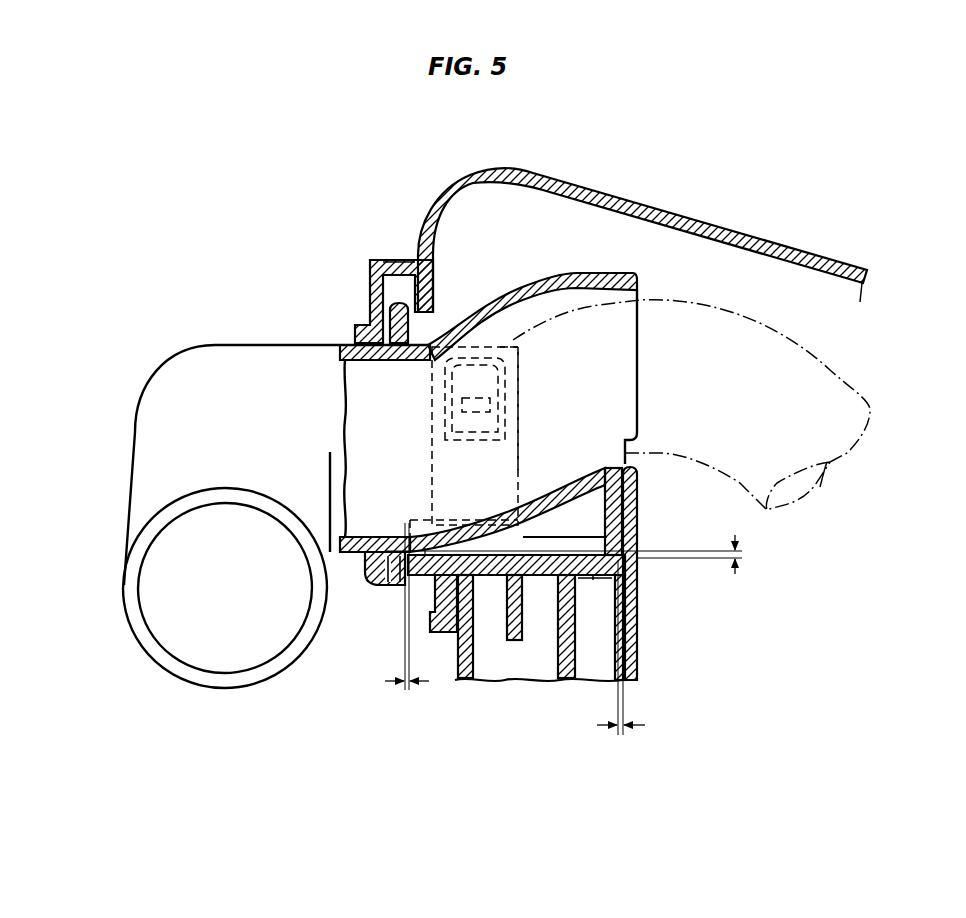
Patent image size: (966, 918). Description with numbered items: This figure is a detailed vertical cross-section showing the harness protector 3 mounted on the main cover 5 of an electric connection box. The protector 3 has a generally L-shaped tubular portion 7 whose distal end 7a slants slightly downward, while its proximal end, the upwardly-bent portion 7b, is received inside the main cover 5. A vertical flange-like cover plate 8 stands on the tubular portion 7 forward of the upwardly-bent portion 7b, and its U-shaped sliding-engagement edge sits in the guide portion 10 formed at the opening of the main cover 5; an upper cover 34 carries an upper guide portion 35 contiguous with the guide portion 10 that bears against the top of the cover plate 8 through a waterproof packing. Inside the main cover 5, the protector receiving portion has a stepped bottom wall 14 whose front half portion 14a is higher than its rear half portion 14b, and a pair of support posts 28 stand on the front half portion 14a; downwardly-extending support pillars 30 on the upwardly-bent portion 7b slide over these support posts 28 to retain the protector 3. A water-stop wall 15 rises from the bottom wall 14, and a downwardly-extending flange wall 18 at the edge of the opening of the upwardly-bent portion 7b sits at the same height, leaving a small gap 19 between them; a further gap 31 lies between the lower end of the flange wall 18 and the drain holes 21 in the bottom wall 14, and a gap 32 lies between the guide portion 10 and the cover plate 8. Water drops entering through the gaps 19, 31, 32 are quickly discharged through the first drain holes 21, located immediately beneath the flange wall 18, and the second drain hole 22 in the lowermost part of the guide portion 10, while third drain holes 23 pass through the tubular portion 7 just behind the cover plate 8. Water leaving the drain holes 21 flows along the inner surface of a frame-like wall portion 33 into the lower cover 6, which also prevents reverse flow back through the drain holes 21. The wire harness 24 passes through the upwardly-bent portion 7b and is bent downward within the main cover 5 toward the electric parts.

The harness protector 3 is at (288, 342).
The main cover 5 is at (658, 591).
The lower cover 6 is at (459, 678).
The tubular portion 7 is at (243, 343).
The distal end 7a is at (288, 668).
The upwardly-bent portion 7b is at (550, 272).
The cover plate 8 is at (372, 300).
The guide portion 10 is at (373, 578).
The bottom wall 14 is at (505, 684).
The front half portion 14a is at (577, 537).
The rear half portion 14b is at (483, 512).
The water-stop wall 15 is at (637, 488).
The flange wall 18 is at (637, 522).
The gap 19 is at (621, 659).
The drain holes 21 is at (598, 577).
The drain hole 22 is at (398, 588).
The drain holes 23 is at (427, 548).
The wire harness 24 is at (848, 375).
The support posts 28 is at (468, 345).
The support pillars 30 is at (518, 380).
The gap 31 is at (580, 554).
The gap 32 is at (407, 620).
The frame-like wall portion 33 is at (566, 680).
The upper cover 34 is at (608, 196).
The upper guide portion 35 is at (395, 258).